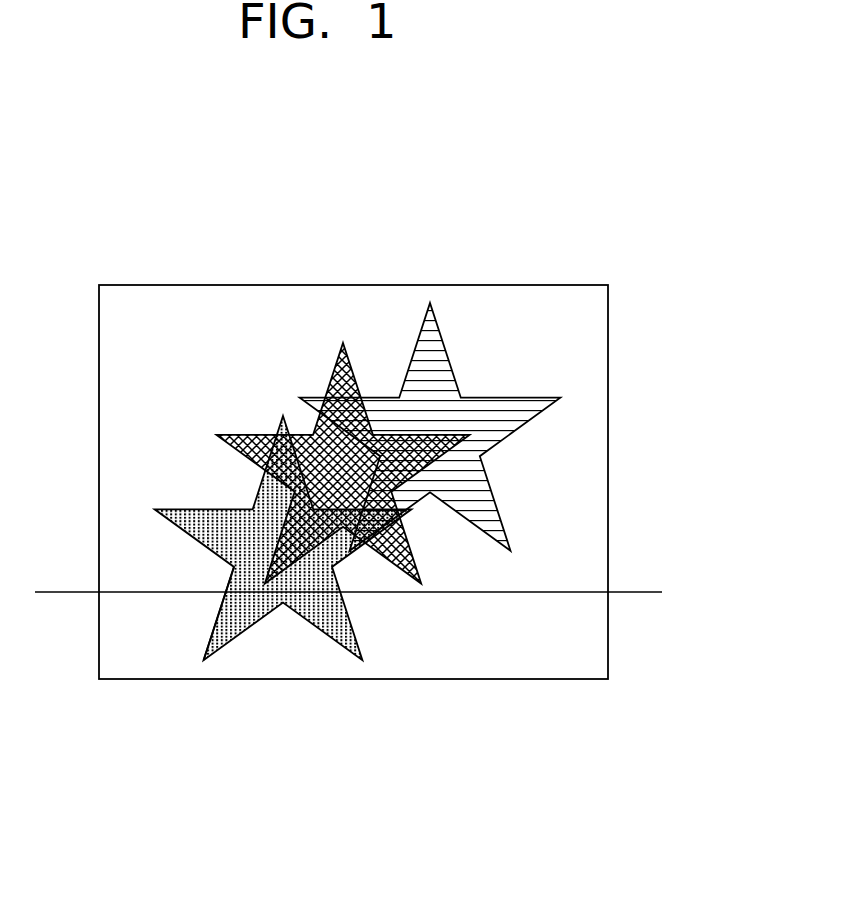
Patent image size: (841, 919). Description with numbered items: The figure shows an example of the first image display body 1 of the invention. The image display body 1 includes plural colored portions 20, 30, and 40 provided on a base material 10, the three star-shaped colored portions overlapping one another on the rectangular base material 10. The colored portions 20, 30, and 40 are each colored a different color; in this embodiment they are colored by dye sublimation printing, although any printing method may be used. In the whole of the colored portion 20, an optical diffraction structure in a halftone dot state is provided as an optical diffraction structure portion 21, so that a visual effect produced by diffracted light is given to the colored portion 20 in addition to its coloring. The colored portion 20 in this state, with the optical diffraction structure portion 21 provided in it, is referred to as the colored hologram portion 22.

The image display body 1 is at (68, 257).
The base material 10 is at (608, 364).
The colored portion 20 is at (176, 508).
The optical diffraction structure portion 21 is at (310, 567).
The colored hologram portion 22 is at (194, 634).
The colored portion 30 is at (345, 342).
The colored portion 40 is at (530, 397).